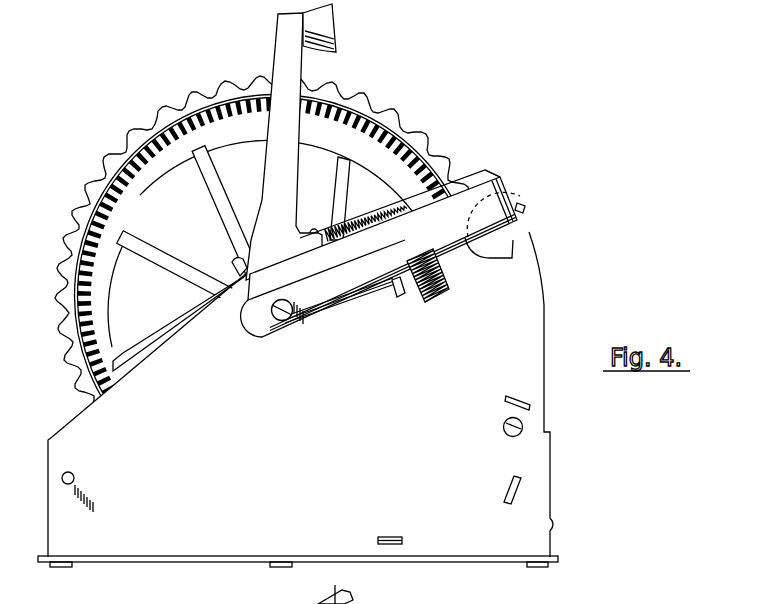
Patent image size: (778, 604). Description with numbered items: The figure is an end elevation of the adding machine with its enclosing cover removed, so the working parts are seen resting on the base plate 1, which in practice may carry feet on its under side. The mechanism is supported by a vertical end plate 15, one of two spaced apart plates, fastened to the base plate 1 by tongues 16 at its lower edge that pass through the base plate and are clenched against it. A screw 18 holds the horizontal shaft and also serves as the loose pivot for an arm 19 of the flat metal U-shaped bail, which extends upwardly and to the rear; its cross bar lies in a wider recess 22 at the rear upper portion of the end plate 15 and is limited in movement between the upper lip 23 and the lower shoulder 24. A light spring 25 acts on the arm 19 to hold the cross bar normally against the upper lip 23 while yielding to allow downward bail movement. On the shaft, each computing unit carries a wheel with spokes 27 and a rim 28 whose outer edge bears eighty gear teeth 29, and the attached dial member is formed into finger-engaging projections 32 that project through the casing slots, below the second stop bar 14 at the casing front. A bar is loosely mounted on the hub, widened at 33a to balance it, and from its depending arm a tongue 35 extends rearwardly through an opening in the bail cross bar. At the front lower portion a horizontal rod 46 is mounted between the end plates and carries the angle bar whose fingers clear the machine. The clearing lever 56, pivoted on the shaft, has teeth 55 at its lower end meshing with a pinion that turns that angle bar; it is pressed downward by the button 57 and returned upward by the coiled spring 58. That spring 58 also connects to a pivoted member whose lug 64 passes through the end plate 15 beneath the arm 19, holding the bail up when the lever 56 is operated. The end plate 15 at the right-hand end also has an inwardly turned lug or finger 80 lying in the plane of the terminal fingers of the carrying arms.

The base plate 1 is at (468, 559).
The second stop bar 14 is at (338, 585).
The end plate 15 is at (537, 350).
The tongue 16 is at (63, 567).
The screw 18 is at (287, 321).
The arm 19 is at (357, 283).
The recess 22 is at (520, 224).
The upper lip 23 is at (502, 178).
The lower shoulder 24 is at (540, 246).
The light spring 25 is at (426, 302).
The spokes 27 is at (181, 270).
The rim 28 is at (178, 170).
The gear teeth 29 is at (393, 141).
The projections 32 is at (158, 106).
The widened portion of bar 33a is at (144, 345).
The tongue 35 is at (524, 208).
The horizontal rod 46 is at (73, 476).
The teeth 55 is at (235, 262).
The lever 56 is at (282, 57).
The button 57 is at (325, 31).
The coiled spring 58 is at (363, 217).
The lug 64 is at (396, 299).
The lug or finger 80 is at (528, 232).